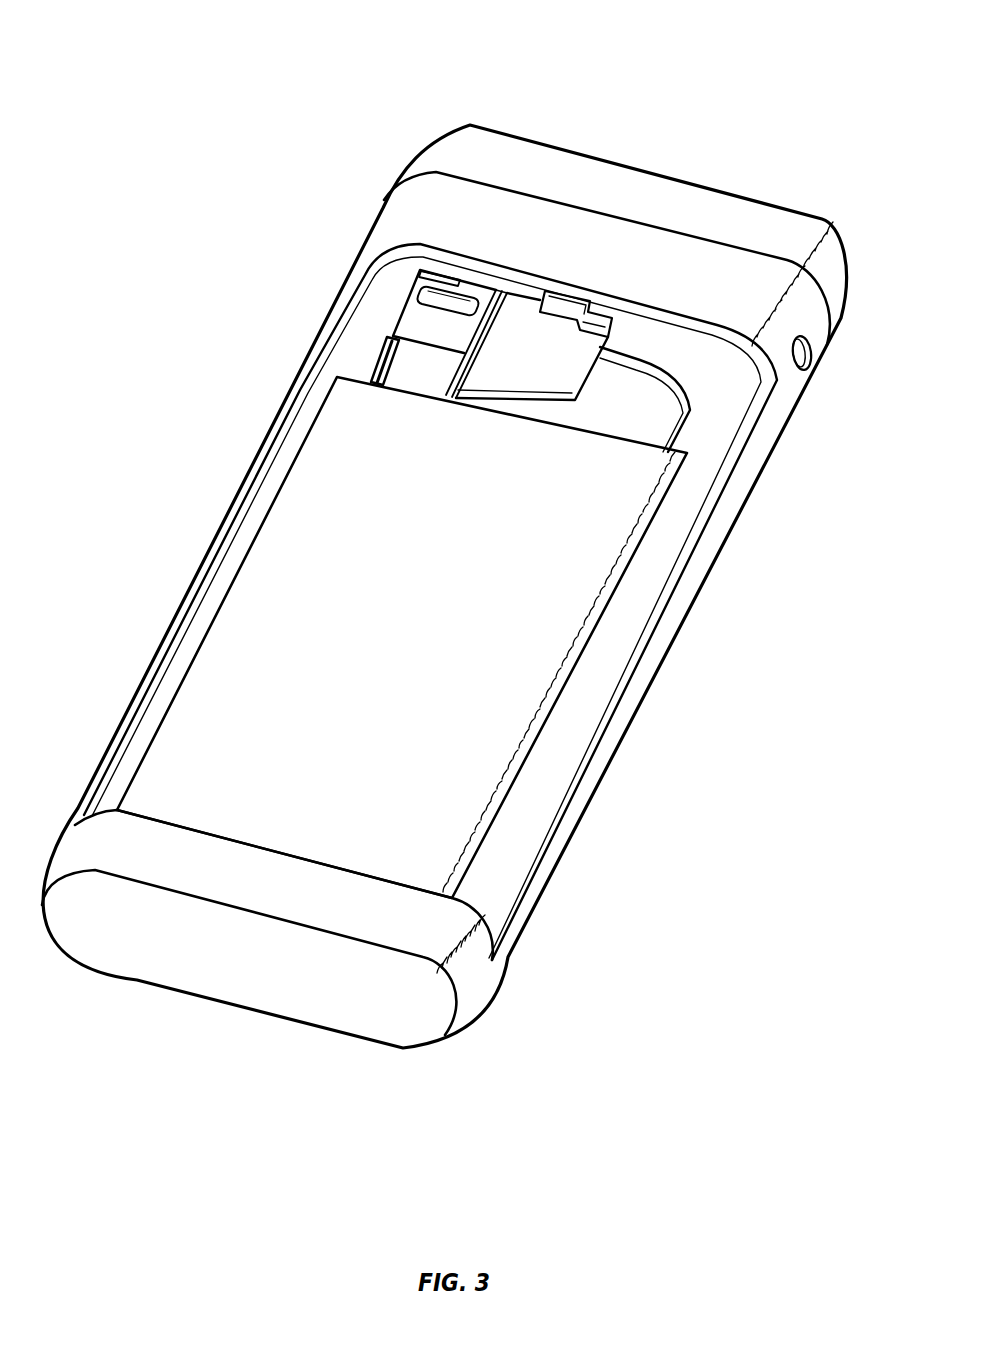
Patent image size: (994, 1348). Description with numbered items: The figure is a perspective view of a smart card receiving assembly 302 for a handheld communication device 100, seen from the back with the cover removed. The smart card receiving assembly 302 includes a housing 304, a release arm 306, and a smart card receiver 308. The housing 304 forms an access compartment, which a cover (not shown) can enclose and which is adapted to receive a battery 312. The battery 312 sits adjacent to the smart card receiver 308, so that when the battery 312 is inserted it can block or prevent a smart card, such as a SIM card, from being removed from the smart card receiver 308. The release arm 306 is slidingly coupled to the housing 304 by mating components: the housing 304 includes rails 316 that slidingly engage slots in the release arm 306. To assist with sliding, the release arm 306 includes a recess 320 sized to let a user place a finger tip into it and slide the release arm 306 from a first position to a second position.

The handheld communication device 100 is at (715, 43).
The smart card receiving assembly 302 is at (390, 292).
The housing 304 is at (378, 358).
The release arm 306 is at (427, 327).
The smart card receiver 308 is at (645, 427).
The battery 312 is at (293, 571).
The rails 316 is at (362, 362).
The recess 320 is at (422, 278).